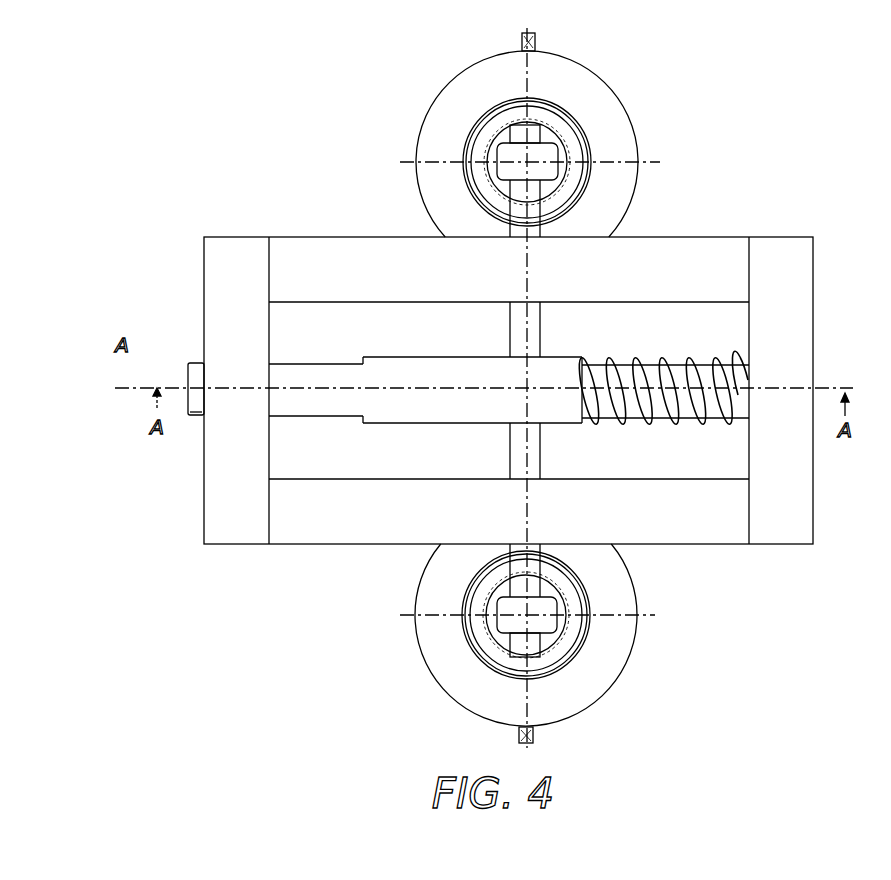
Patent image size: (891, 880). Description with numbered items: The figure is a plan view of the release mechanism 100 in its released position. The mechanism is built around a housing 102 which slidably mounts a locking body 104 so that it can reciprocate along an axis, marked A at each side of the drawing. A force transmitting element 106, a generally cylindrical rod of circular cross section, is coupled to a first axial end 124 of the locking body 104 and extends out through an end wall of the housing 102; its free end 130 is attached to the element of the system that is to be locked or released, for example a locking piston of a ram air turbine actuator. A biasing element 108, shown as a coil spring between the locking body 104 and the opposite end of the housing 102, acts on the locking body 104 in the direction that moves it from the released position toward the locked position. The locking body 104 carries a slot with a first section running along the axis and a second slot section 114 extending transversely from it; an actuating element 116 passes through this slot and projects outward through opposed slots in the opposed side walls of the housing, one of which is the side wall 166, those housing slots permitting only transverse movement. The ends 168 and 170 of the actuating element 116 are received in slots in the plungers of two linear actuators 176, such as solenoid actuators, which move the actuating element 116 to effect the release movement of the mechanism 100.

The release mechanism 100 is at (790, 179).
The housing 102 is at (727, 535).
The locking body 104 is at (565, 366).
The force transmitting element 106 is at (198, 415).
The biasing element 108 is at (745, 375).
The second slot section 114 is at (303, 535).
The actuating element 116 is at (510, 449).
The first axial end 124 is at (362, 357).
The free end 130 is at (198, 363).
The side wall 166 is at (300, 246).
The end of actuating element 168 is at (535, 133).
The end of actuating element 170 is at (535, 565).
The linear actuator 176 is at (473, 74).